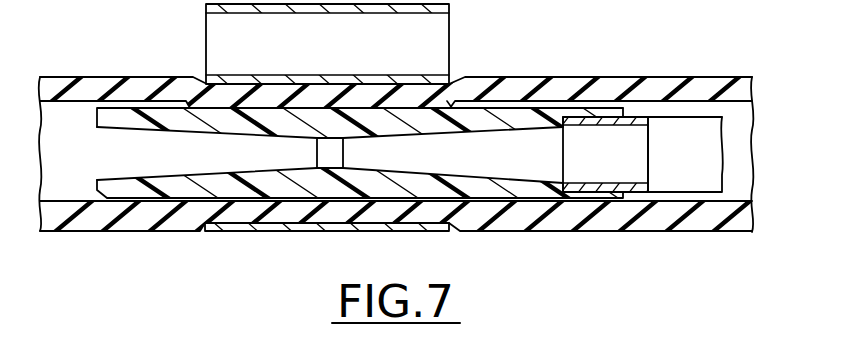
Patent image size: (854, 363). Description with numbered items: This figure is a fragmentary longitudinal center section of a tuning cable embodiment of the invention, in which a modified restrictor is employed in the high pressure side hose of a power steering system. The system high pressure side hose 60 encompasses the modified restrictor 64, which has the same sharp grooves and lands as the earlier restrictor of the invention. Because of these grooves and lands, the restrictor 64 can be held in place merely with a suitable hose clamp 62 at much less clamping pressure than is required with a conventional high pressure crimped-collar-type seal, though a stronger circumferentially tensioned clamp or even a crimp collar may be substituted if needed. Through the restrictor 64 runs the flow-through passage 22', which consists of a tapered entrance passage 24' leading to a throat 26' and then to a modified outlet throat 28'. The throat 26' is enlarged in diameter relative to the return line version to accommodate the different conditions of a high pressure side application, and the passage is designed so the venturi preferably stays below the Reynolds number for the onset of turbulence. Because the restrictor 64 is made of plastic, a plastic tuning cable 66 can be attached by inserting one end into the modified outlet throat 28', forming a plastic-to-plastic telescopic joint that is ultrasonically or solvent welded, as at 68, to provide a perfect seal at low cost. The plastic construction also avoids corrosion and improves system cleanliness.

The high pressure side hose 60 is at (40, 78).
The hose clamp 62 is at (452, 33).
The modified restrictor 64 is at (493, 101).
The plastic tuning cable 66 is at (687, 115).
The weld 68 is at (578, 126).
The flow-through passage 22' is at (183, 153).
The entrance passage 24' is at (275, 167).
The throat 26' is at (300, 212).
The modified outlet throat 28' is at (475, 159).